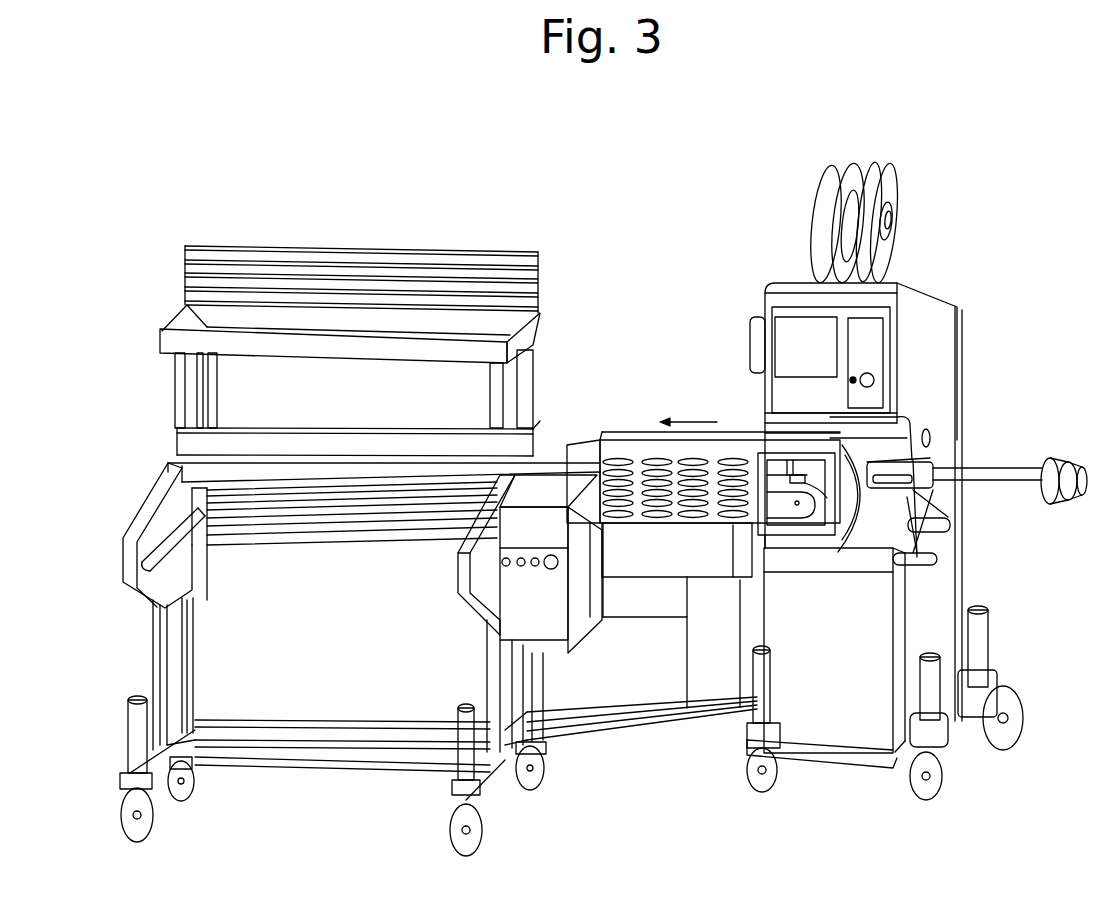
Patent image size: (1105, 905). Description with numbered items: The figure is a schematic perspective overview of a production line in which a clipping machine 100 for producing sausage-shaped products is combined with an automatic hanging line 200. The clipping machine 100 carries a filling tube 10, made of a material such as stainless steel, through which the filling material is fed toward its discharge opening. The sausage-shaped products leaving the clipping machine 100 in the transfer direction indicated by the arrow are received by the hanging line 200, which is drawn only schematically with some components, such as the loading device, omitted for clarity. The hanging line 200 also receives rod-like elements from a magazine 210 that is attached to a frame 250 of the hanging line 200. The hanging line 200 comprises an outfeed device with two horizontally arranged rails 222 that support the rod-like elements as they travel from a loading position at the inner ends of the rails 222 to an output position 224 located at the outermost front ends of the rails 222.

The hanging line 200 is at (228, 200).
The magazine 210 is at (162, 340).
The output position 224 is at (145, 528).
The frame 250 is at (153, 660).
The rails 222 is at (160, 568).
The clipping machine 100 is at (923, 313).
The filling tube 10 is at (1007, 470).